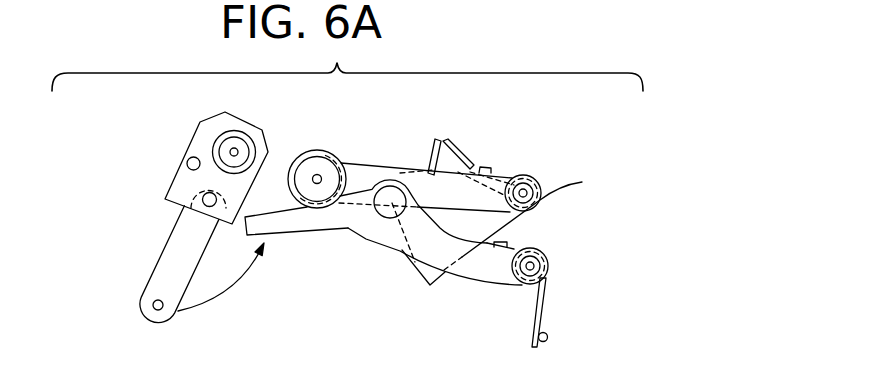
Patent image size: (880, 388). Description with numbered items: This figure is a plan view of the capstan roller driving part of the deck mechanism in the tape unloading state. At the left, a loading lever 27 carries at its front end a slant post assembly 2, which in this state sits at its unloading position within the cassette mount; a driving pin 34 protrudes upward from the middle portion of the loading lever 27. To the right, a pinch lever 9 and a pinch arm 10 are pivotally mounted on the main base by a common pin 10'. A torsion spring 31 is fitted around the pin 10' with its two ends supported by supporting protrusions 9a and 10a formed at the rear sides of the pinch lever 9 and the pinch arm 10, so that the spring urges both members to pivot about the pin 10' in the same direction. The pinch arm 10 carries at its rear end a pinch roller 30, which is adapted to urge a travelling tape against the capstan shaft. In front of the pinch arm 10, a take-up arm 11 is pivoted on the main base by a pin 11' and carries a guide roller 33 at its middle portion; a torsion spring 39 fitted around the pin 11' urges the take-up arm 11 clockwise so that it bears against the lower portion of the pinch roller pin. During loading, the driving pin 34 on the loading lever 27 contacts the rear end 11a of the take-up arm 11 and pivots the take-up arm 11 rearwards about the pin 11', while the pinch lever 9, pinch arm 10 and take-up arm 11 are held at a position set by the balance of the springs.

The slant post assembly 2 is at (193, 132).
The loading lever 27 is at (170, 252).
The driving pin 34 is at (152, 307).
The pinch roller 30 is at (306, 150).
The pinch arm 10 is at (426, 159).
The supporting protrusion 9a is at (434, 140).
The torsion spring 31 is at (462, 150).
The supporting protrusion 10a is at (493, 164).
The pin 10' is at (532, 217).
The rear end of take-up arm 11a is at (289, 227).
The guide roller 33 is at (387, 222).
The take-up arm 11 is at (435, 272).
The pinch lever 9 is at (483, 238).
The pin 11' is at (579, 264).
The torsion spring 39 is at (545, 309).